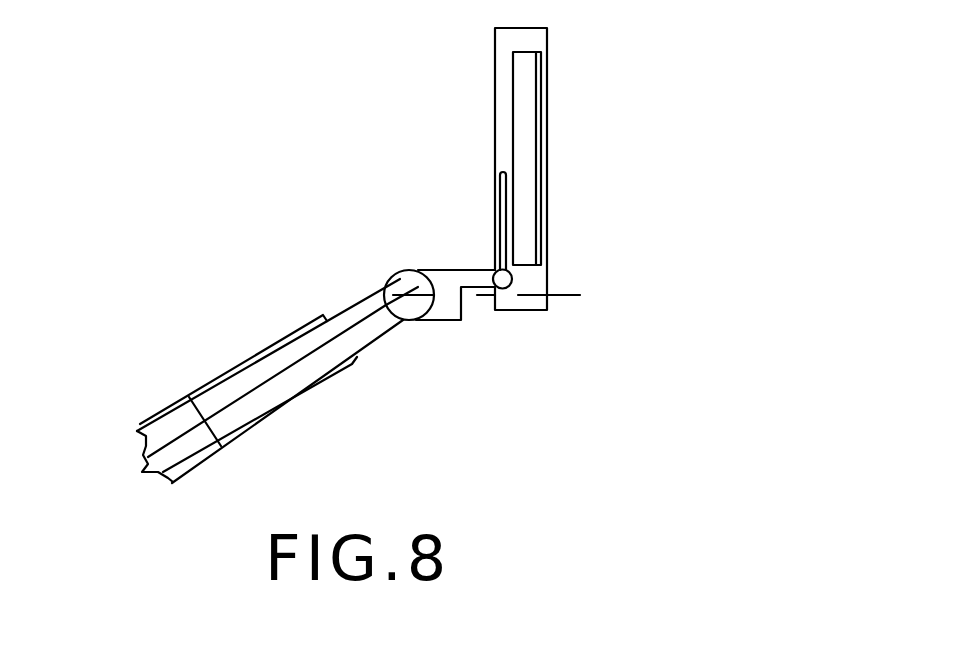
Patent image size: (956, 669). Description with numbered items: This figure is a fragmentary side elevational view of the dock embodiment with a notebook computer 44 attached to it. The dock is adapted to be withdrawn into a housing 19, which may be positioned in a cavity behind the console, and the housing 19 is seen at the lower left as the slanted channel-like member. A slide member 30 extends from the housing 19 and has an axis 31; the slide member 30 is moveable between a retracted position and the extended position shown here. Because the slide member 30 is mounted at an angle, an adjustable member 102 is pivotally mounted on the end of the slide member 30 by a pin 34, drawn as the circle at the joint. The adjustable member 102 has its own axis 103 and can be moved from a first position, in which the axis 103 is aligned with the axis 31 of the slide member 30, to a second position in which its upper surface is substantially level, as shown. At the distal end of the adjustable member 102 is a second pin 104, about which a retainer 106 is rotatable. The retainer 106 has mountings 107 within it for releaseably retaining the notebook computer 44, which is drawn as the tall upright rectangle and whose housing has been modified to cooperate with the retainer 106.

The housing 19 is at (148, 422).
The slide member 30 is at (352, 298).
The axis 31 is at (180, 411).
The pin 34 is at (394, 275).
The adjustable member 102 is at (448, 268).
The axis 103 is at (485, 293).
The second pin 104 is at (512, 277).
The retainer 106 is at (495, 146).
The mountings 107 is at (547, 40).
The notebook computer 44 is at (547, 148).